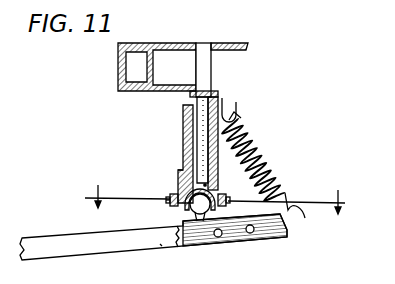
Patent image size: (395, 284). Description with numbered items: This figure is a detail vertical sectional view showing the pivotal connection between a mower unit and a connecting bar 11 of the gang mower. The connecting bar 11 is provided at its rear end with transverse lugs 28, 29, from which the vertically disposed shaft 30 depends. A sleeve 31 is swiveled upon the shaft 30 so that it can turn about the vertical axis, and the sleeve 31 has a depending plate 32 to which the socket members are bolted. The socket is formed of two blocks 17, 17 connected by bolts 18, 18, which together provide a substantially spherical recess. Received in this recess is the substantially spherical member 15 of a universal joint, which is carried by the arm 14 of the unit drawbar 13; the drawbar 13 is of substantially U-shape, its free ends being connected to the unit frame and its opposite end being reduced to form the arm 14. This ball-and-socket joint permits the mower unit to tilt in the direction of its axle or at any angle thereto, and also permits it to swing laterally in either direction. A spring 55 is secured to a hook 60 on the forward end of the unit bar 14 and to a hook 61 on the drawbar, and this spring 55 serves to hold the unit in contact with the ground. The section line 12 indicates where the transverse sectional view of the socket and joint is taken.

The connecting bar 11 is at (118, 66).
The transverse lug 28 is at (186, 43).
The transverse lug 29 is at (204, 96).
The shaft 30 is at (212, 108).
The sleeve 31 is at (186, 134).
The depending plate 32 is at (178, 172).
The spherical member 15 is at (200, 205).
The blocks 17 is at (178, 190).
The bolts 18 is at (168, 198).
The hook 61 is at (244, 107).
The spring 55 is at (268, 163).
The hook 60 is at (304, 218).
The unit drawbar 13 is at (40, 240).
The arm 14 is at (162, 244).
The section line 12- 12 is at (216, 194).